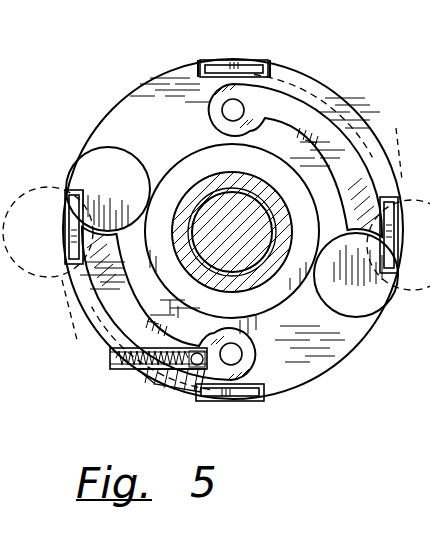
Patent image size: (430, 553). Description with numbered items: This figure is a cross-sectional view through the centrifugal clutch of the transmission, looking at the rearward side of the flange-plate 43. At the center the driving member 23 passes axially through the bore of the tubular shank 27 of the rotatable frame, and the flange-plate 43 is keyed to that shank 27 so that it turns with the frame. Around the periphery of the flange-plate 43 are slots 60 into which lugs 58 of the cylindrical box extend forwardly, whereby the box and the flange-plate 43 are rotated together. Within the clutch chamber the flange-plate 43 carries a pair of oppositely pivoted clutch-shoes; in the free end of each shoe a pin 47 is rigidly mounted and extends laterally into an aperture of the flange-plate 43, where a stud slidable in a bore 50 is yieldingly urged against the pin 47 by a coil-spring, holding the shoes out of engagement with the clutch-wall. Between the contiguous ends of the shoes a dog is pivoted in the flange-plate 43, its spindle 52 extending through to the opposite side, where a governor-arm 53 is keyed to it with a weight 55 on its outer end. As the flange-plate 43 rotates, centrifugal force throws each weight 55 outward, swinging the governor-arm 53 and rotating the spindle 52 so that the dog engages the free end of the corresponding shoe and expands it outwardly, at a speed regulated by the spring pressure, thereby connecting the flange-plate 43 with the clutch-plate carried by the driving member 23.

The driving member 23 is at (205, 190).
The tubular shank 27 is at (258, 265).
The flange-plate 43 is at (125, 112).
The pin 47 is at (176, 384).
The bore 50 is at (122, 357).
The spindle 52 is at (233, 110).
The governor-arm 53 is at (352, 165).
The weight 55 is at (85, 179).
The lug 58 is at (240, 62).
The slot 60 is at (208, 62).